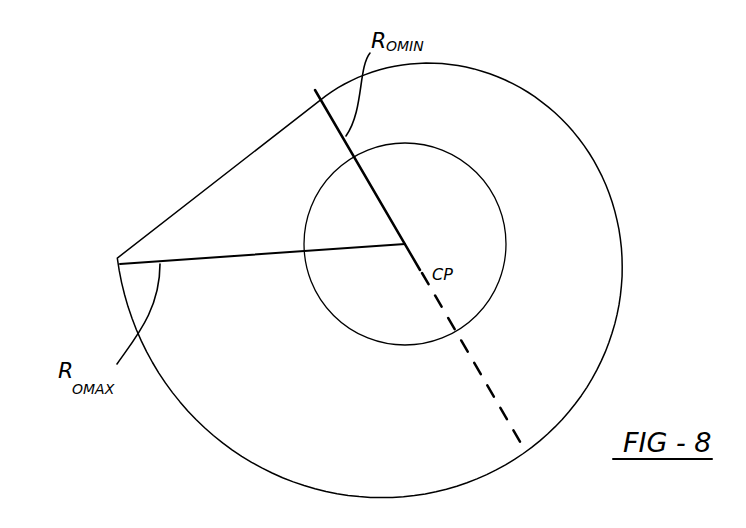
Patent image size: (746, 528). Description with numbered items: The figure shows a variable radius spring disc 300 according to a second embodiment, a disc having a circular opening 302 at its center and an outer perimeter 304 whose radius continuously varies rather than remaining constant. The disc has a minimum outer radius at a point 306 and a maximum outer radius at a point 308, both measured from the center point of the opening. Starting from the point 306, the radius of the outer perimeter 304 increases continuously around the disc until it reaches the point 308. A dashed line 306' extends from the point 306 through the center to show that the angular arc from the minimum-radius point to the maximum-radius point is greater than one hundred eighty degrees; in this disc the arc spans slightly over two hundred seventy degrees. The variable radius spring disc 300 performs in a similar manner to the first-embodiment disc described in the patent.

The variable radius spring disc 300 is at (414, 280).
The circular opening 302 is at (497, 203).
The outer perimeter 304 is at (626, 322).
The point of minimum outer radius 306 is at (316, 149).
The dashed line 306' is at (545, 362).
The point of maximum outer radius 308 is at (120, 264).